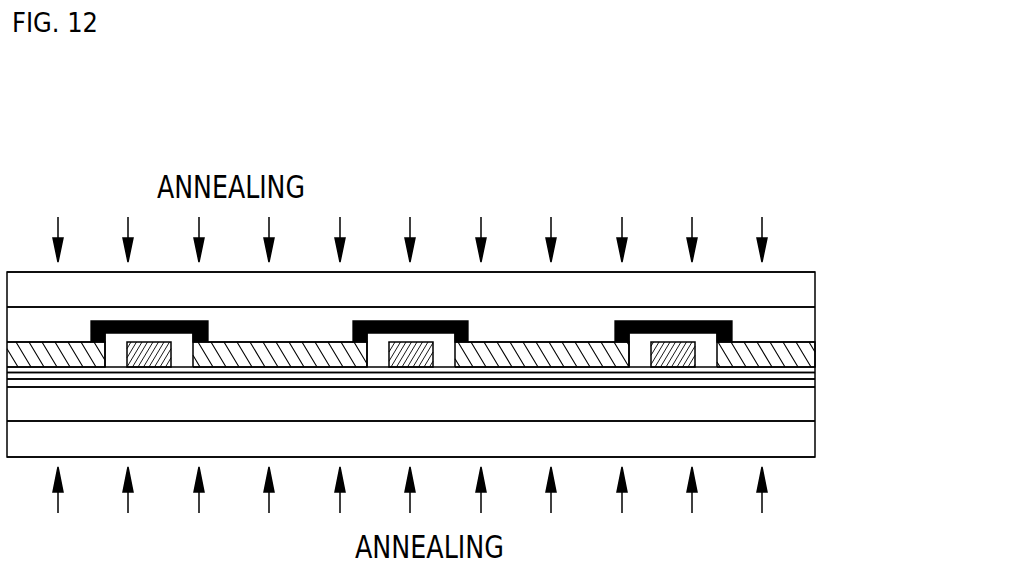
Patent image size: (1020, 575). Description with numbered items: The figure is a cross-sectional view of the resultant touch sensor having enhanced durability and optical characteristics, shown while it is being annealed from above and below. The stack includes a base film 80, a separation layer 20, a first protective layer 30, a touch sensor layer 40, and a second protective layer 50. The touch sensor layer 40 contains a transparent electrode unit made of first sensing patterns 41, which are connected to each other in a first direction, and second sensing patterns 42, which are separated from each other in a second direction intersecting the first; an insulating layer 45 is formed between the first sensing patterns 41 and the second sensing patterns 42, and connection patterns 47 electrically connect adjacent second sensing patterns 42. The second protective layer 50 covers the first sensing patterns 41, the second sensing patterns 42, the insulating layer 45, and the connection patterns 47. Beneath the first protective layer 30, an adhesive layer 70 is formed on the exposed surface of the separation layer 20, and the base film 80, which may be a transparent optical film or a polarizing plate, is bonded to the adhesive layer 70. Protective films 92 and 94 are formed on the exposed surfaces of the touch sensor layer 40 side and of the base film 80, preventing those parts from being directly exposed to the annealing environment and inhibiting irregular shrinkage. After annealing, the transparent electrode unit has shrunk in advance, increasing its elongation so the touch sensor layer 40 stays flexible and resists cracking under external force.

The touch sensor layer 40 is at (632, 157).
The first sensing patterns 41 is at (412, 348).
The second sensing patterns 42 is at (545, 357).
The insulating layer 45 is at (442, 352).
The connection patterns 47 is at (379, 321).
The second protective layer 50 is at (800, 322).
The protective film 92 is at (805, 288).
The first protective layer 30 is at (815, 369).
The separation layer 20 is at (815, 380).
The adhesive layer 70 is at (815, 387).
The base film 80 is at (807, 403).
The protective film 94 is at (807, 445).